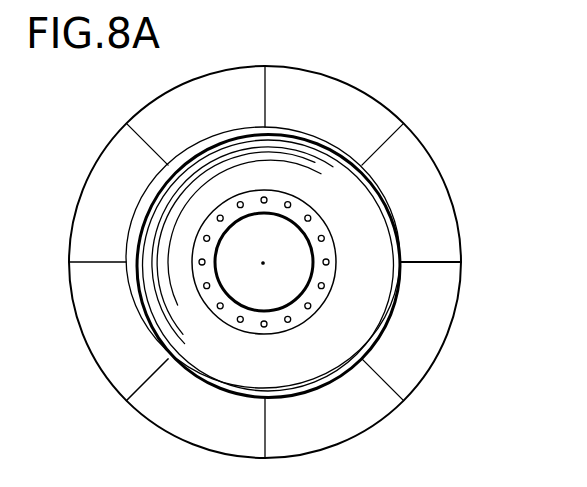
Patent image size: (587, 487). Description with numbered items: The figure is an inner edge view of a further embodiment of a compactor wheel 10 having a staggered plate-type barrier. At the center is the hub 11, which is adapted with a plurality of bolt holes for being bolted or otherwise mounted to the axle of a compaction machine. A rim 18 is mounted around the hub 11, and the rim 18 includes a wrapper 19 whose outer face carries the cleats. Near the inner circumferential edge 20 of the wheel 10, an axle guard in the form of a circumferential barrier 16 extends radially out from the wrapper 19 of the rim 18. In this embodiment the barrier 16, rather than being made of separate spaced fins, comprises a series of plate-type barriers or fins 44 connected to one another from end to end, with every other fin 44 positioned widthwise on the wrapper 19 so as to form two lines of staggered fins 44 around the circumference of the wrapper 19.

The compactor wheel 10 is at (128, 105).
The circumferential barrier 16 is at (362, 85).
The plate-type fins 44 is at (198, 88).
The inner circumferential edge 20 is at (402, 242).
The rim 18 is at (238, 138).
The hub 11 is at (303, 293).
The wrapper 19 is at (198, 380).